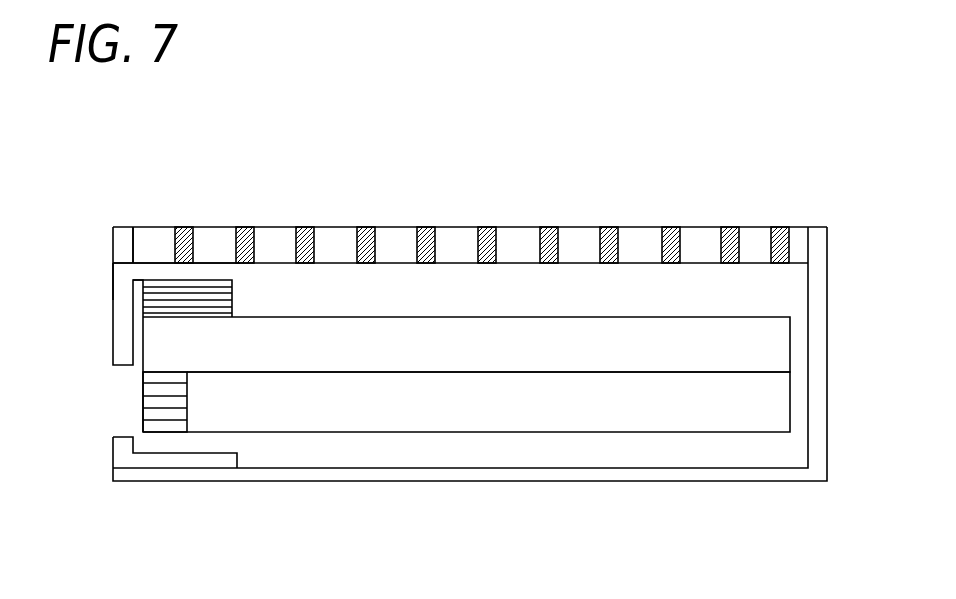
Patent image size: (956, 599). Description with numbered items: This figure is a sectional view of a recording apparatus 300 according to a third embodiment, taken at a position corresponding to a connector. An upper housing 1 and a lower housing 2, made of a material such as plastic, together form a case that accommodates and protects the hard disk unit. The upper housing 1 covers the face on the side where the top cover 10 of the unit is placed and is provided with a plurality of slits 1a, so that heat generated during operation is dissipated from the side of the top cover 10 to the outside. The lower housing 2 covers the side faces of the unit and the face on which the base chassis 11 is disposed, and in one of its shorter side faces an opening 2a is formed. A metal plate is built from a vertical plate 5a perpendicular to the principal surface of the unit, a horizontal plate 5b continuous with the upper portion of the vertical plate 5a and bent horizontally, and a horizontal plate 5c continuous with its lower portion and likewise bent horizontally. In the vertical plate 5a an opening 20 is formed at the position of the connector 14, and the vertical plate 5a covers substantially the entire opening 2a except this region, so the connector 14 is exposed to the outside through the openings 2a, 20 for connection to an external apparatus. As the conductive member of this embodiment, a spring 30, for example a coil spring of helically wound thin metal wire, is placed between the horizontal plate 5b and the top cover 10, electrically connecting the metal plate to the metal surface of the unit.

The recording apparatus 300 is at (423, 184).
The upper housing 1 is at (523, 238).
The slits 1a is at (781, 240).
The vertical plate 5a is at (118, 297).
The horizontal plate 5b is at (163, 272).
The horizontal plate 5c is at (217, 468).
The spring 30 is at (229, 303).
The opening 2a is at (100, 310).
The opening 20 is at (129, 402).
The top cover 10 is at (783, 352).
The base chassis 11 is at (783, 412).
The connector 14 is at (161, 412).
The lower housing 2 is at (518, 481).